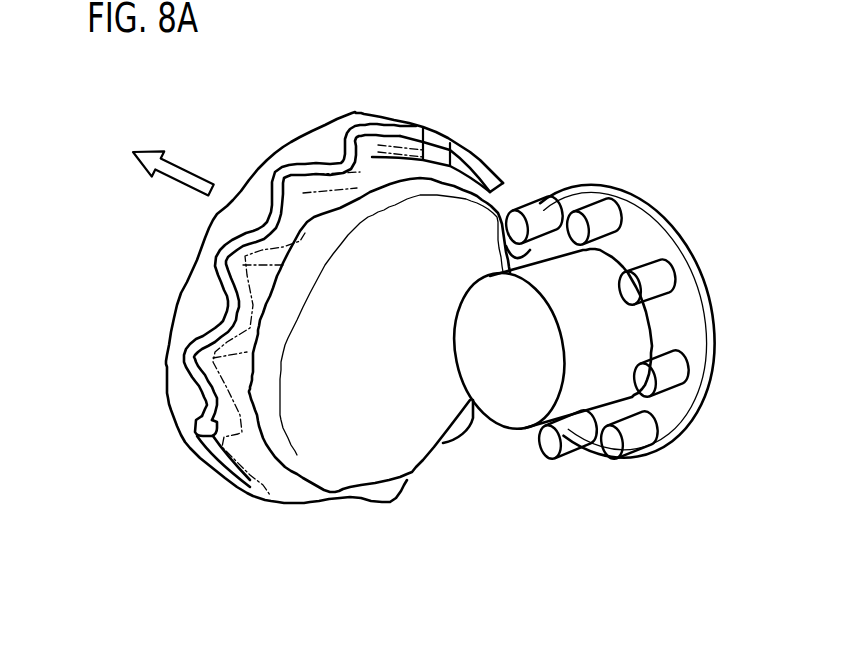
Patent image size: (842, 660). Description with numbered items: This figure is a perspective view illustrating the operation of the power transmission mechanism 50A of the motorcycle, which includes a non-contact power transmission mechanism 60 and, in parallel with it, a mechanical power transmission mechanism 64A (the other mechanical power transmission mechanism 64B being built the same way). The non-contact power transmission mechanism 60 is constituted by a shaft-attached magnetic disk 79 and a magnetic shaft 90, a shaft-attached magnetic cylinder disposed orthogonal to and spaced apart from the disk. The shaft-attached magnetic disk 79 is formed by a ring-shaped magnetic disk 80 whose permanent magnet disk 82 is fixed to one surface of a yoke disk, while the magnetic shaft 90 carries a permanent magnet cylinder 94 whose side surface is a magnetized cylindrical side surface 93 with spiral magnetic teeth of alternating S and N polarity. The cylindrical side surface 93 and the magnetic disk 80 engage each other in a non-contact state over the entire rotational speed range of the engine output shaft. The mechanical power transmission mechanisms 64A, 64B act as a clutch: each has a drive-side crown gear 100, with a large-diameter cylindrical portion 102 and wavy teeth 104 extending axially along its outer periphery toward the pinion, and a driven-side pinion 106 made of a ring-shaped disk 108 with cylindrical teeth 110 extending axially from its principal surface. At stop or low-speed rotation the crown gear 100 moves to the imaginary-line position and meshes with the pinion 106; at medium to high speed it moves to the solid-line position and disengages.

The power transmission mechanism 50A is at (507, 70).
The non-contact power transmission mechanism 60 is at (438, 581).
The mechanical power transmission mechanism 64A is at (573, 154).
The mechanical power transmission mechanism 64B is at (616, 368).
The shaft-attached magnetic disk 79 is at (297, 470).
The magnetic disk 80 is at (297, 430).
The permanent magnet disk 82 is at (408, 442).
The magnetic shaft 90 is at (490, 428).
The magnetized cylindrical side surface 93 is at (510, 413).
The permanent magnet cylinder 94 is at (590, 273).
The crown gear 100 is at (312, 88).
The cylindrical portion 102 is at (305, 233).
The wavy teeth 104 is at (303, 237).
The pinion 106 is at (730, 507).
The disk 108 is at (683, 418).
The cylindrical teeth 110 is at (635, 438).